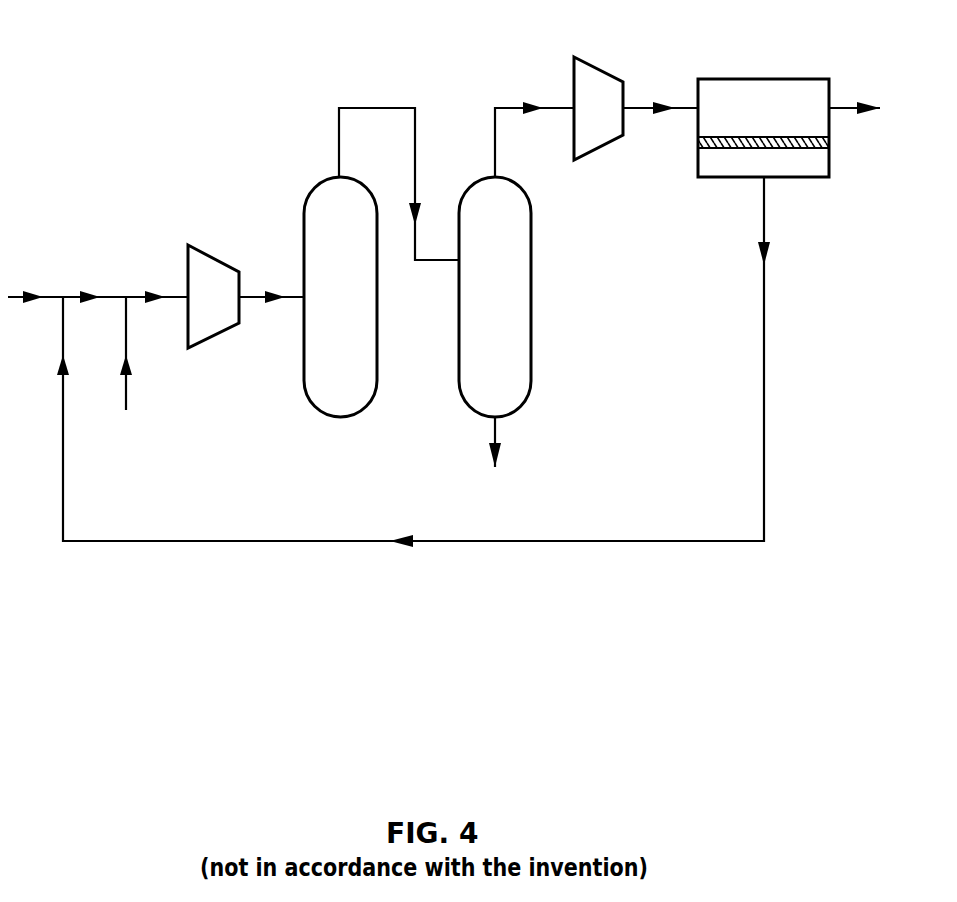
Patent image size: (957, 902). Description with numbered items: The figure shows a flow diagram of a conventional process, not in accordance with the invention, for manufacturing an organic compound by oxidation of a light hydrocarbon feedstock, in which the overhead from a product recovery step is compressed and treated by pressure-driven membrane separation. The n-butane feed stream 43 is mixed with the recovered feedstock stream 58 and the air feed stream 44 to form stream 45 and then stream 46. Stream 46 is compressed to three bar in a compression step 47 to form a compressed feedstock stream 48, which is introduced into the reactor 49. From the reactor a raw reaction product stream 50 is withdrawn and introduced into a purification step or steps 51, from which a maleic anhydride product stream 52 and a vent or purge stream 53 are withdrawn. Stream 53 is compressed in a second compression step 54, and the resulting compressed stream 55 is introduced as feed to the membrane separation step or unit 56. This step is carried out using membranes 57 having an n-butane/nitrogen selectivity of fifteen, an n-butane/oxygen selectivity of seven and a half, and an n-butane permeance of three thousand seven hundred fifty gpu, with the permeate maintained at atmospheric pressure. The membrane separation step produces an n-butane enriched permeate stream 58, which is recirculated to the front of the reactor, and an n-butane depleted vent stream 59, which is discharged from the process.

The n-butane feed stream 43 is at (31, 284).
The air feed stream 44 is at (129, 369).
The mixed stream 45 is at (75, 284).
The combined feedstock stream 46 is at (144, 284).
The compression step 47 is at (218, 259).
The compressed feedstock stream 48 is at (271, 284).
The reactor 49 is at (300, 385).
The raw reaction product stream 50 is at (399, 170).
The purification step 51 is at (531, 250).
The maleic anhydride product stream 52 is at (515, 445).
The vent or purge stream 53 is at (534, 127).
The compression step 54 is at (602, 68).
The compressed stream 55 is at (660, 125).
The membrane separation step or unit 56 is at (772, 79).
The membranes 57 is at (757, 137).
The n-butane enriched permeate stream 58 is at (413, 376).
The permeate stream 59 is at (874, 110).